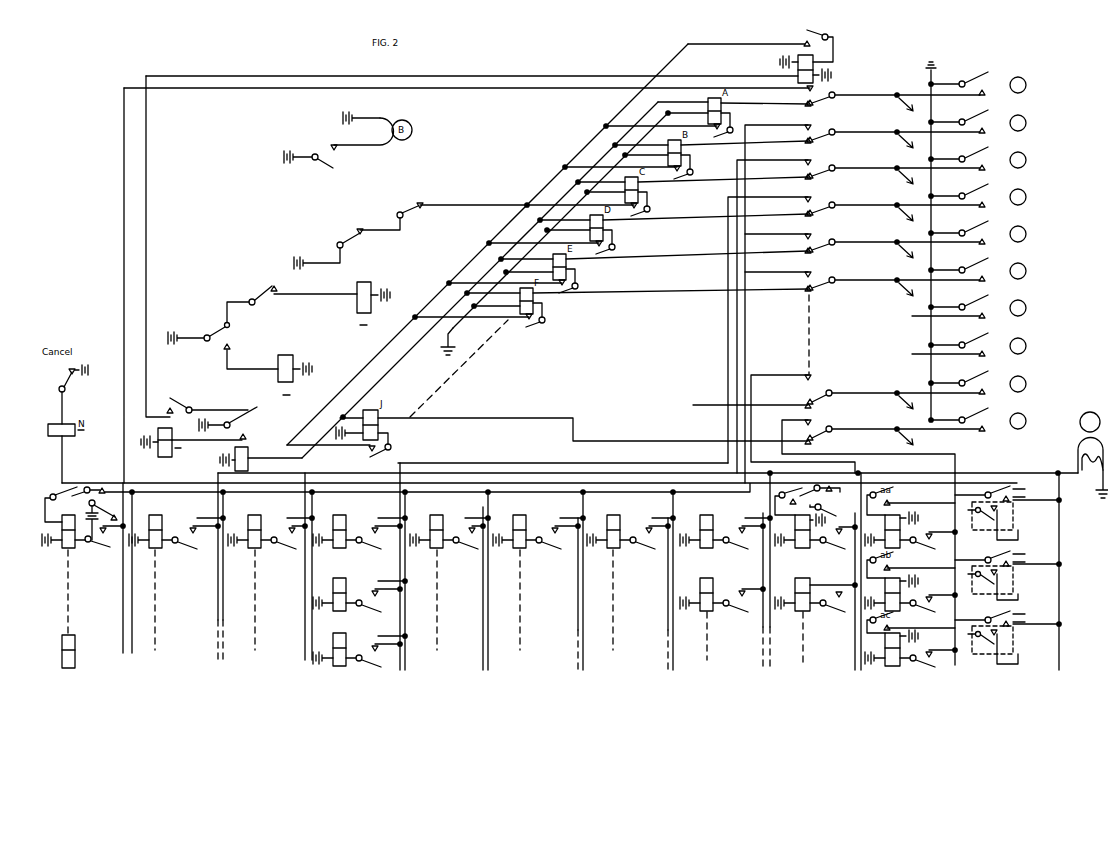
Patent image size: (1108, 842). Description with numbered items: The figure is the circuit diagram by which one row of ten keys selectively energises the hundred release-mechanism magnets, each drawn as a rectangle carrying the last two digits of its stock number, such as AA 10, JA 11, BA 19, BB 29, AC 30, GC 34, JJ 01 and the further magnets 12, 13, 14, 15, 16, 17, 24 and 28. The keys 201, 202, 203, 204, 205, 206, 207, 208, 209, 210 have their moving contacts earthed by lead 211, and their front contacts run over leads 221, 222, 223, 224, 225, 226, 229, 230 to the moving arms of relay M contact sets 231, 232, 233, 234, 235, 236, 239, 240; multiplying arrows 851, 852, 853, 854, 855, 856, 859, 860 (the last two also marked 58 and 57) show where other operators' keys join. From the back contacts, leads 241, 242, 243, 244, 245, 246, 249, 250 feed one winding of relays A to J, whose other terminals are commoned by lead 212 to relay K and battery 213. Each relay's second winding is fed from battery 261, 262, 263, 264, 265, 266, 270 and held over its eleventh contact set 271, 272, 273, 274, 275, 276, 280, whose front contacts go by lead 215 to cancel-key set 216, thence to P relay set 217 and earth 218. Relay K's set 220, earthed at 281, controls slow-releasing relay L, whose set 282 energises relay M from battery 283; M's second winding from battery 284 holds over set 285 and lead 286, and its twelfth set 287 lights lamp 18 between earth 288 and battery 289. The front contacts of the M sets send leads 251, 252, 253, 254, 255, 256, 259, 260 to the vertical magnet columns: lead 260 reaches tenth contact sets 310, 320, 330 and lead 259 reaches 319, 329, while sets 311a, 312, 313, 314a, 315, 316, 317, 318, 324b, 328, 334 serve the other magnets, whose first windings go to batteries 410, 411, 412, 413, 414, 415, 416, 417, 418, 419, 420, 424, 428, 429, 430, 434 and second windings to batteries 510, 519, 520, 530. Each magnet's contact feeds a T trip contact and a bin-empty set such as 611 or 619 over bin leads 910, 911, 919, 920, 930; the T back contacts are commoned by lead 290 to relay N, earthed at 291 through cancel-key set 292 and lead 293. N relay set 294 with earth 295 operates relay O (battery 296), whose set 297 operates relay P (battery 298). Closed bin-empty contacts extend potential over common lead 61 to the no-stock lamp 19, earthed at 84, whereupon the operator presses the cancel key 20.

The lamp 18 is at (381, 126).
The no stock lamp 19 is at (1078, 442).
The cancel key 20 is at (399, 203).
The arrow 57 is at (912, 438).
The arrow 58 is at (912, 402).
The common lead 61 is at (1068, 481).
The ground 84 is at (1101, 492).
The key contact 201 is at (977, 83).
The key contact 202 is at (977, 121).
The key contact 203 is at (977, 158).
The key contact 204 is at (977, 195).
The key contact 205 is at (977, 232).
The key contact 206 is at (977, 269).
The key contact 207 is at (969, 306).
The key contact 208 is at (969, 344).
The key contact 209 is at (977, 382).
The key contact 210 is at (977, 419).
The earth lead 211 is at (940, 240).
The common lead 212 is at (275, 452).
The battery connection 213 is at (231, 455).
The lead 215 is at (525, 204).
The cancel key contact set 216 is at (399, 218).
The P relay contact set 217 is at (351, 240).
The earth connection 218 is at (315, 258).
The K relay contact set 220 is at (215, 423).
The lead 221 is at (907, 90).
The lead 222 is at (907, 127).
The lead 223 is at (907, 163).
The lead 224 is at (907, 200).
The lead 225 is at (907, 237).
The lead 226 is at (907, 275).
The lead 229 is at (906, 388).
The lead 230 is at (906, 424).
The relay M contact set 231 is at (814, 97).
The relay M contact set 232 is at (814, 134).
The relay M contact set 233 is at (814, 170).
The relay M contact set 234 is at (814, 207).
The relay M contact set 235 is at (814, 244).
The relay M contact set 236 is at (814, 282).
The relay M contact set 239 is at (809, 393).
The relay M contact set 240 is at (868, 446).
The lead 241 is at (734, 99).
The lead 242 is at (712, 147).
The lead 243 is at (693, 183).
The lead 244 is at (674, 221).
The lead 245 is at (655, 258).
The lead 246 is at (638, 295).
The lead 249 is at (752, 401).
The lead 250 is at (595, 431).
The lead 251 is at (468, 85).
The lead 252 is at (745, 355).
The lead 253 is at (737, 342).
The lead 254 is at (728, 328).
The lead 255 is at (778, 231).
The lead 256 is at (778, 269).
The lead 259 is at (803, 424).
The operating lead 260 is at (846, 448).
The battery connection 261 is at (687, 108).
The battery connection 262 is at (645, 150).
The battery connection 263 is at (605, 187).
The battery connection 264 is at (567, 226).
The battery connection 265 is at (528, 267).
The battery connection 266 is at (496, 301).
The battery connection 270 is at (349, 427).
The eleventh contact set of relay A 271 is at (668, 127).
The eleventh contact set of relay B 272 is at (628, 169).
The eleventh contact set of relay C 273 is at (587, 206).
The eleventh contact set of relay D 274 is at (551, 244).
The eleventh contact set of relay E 275 is at (512, 283).
The eleventh contact set of relay F 276 is at (479, 317).
The eleventh contact set of relay J 280 is at (339, 448).
The earth connection 281 is at (203, 422).
The L relay contact set 282 is at (206, 405).
The battery connection 283 is at (825, 63).
The battery connection 284 is at (783, 56).
The eleventh contact set of relay M 285 is at (809, 41).
The lead 286 is at (736, 46).
The twelfth contact set of relay M 287 is at (332, 155).
The earth connection 288 is at (296, 152).
The battery connection 289 is at (361, 110).
The common trip contact lead 290 is at (52, 459).
The earth connection 291 is at (86, 363).
The cancel key contact set 292 is at (62, 382).
The lead 293 is at (72, 408).
The N relay contact set 294 is at (241, 335).
The earth connection 295 is at (183, 332).
The battery connection 296 is at (302, 372).
The O relay contact set 297 is at (303, 293).
The battery connection 298 is at (377, 300).
The tenth contact set of relay A 310 is at (928, 539).
The first contact set of relay A 311a is at (101, 535).
The second contact set of relay A 312 is at (193, 532).
The third contact set of relay A 313 is at (287, 532).
The fourth contact set of relay A 314a is at (376, 532).
The fifth contact set of relay A 315 is at (466, 532).
The sixth contact set of relay A 316 is at (555, 532).
The seventh contact set of relay A 317 is at (647, 532).
The eighth contact set of relay A 318 is at (742, 532).
The ninth contact set of relay A 319 is at (833, 537).
The tenth contact set of relay B 320 is at (928, 602).
The fourth contact set of relay B 324b is at (376, 595).
The eighth contact set of relay B 328 is at (739, 599).
The ninth contact set of relay B 329 is at (832, 602).
The tenth contact set of relay C 330 is at (928, 657).
The fourth contact set of relay C 334 is at (376, 650).
The battery connection 410 is at (874, 534).
The battery connection 411 is at (49, 546).
The battery connection 412 is at (139, 534).
The battery connection 413 is at (238, 534).
The battery connection 414 is at (323, 534).
The battery connection 415 is at (420, 534).
The battery connection 416 is at (503, 534).
The battery connection 417 is at (597, 534).
The battery connection 418 is at (690, 534).
The battery connection 419 is at (784, 534).
The battery connection 420 is at (874, 597).
The battery connection 424 is at (323, 597).
The battery connection 428 is at (690, 597).
The battery connection 429 is at (784, 597).
The battery connection 430 is at (875, 665).
The battery connection 434 is at (323, 652).
The battery connection 510 is at (919, 518).
The battery connection 519 is at (827, 520).
The battery connection 520 is at (919, 581).
The battery connection 530 is at (919, 636).
The bin empty contact set 611 is at (78, 505).
The bin empty contact set 619 is at (807, 500).
The multiplying arrow 851 is at (909, 109).
The multiplying arrow 852 is at (909, 146).
The multiplying arrow 853 is at (909, 182).
The multiplying arrow 854 is at (909, 219).
The multiplying arrow 855 is at (909, 256).
The multiplying arrow 856 is at (909, 294).
The multiplying arrow 859 is at (908, 416).
The multiplying arrow 860 is at (892, 450).
The bin lead 910 is at (1008, 511).
The bin lead 911 is at (78, 484).
The bin lead 919 is at (820, 470).
The bin lead 920 is at (1008, 574).
The bin lead 930 is at (1008, 636).
The stock number final portion of magnet AA 10 is at (895, 528).
The stock number final portion of magnet JA 11 is at (72, 538).
The stock number final portion 12 is at (159, 531).
The stock number final portion 13 is at (258, 531).
The stock number final portion 14 is at (343, 531).
The stock number final portion 15 is at (440, 531).
The stock number final portion 16 is at (523, 531).
The stock number final portion 17 is at (617, 531).
The stock number final portion 24 is at (343, 594).
The stock number final portion 28 is at (710, 594).
The stock number final portion of magnet BB 29 is at (826, 589).
The stock number final portion of magnet AC 30 is at (895, 646).
The stock number final portion of magnet GC 34 is at (343, 644).
The stock number final portion of magnet JJ 01 is at (64, 651).